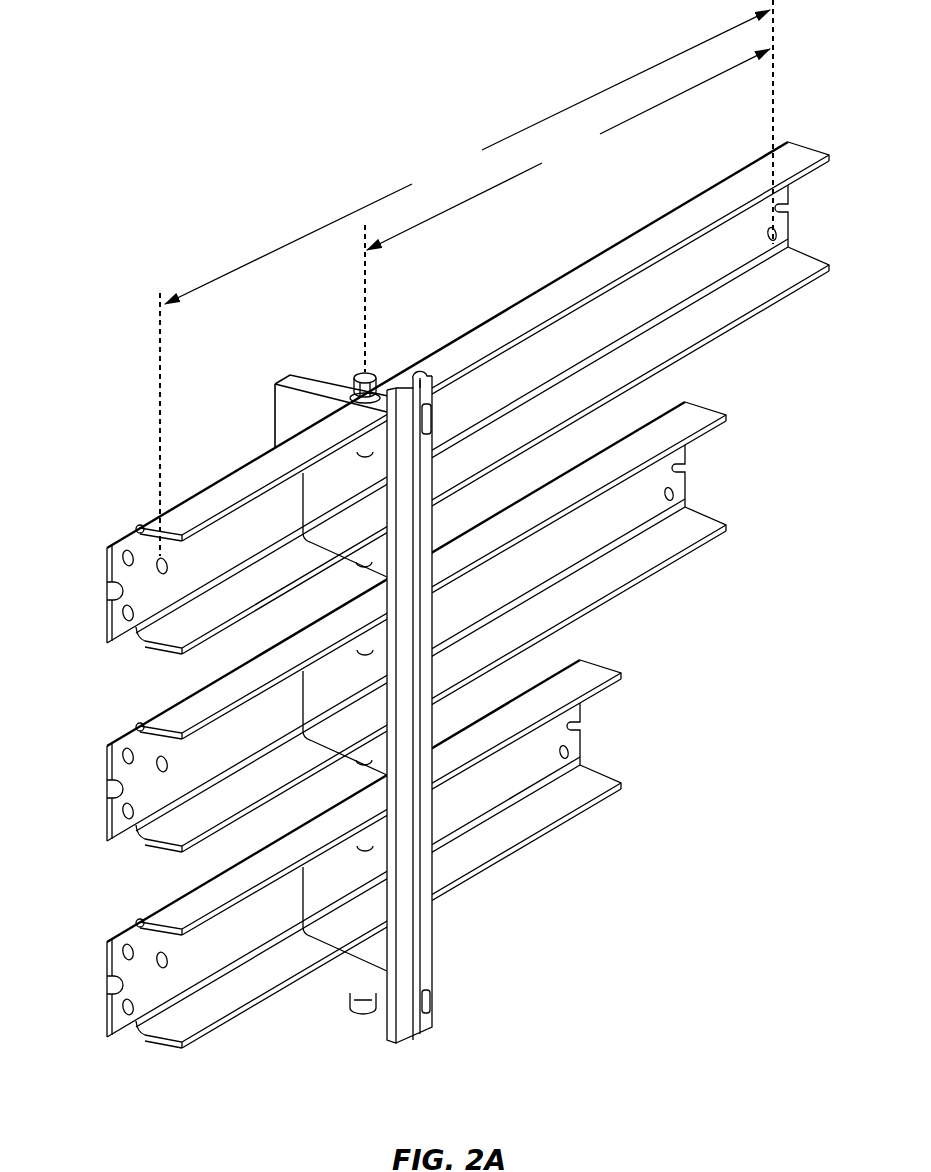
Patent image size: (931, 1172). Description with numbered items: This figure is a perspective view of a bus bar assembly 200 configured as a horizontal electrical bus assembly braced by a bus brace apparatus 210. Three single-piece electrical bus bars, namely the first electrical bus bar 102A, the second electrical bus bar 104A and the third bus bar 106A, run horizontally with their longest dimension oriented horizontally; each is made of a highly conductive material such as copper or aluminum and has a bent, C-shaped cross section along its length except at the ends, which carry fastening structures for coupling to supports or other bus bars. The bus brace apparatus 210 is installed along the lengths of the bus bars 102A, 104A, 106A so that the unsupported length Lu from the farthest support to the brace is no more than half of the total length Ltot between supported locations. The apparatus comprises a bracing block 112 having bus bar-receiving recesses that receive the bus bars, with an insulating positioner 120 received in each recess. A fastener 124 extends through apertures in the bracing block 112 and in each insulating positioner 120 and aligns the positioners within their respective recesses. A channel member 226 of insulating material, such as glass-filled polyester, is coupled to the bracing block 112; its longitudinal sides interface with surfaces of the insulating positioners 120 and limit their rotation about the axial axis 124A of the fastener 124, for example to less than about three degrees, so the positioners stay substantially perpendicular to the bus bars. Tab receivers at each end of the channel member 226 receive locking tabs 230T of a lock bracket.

The bus bar assembly 200 is at (180, 238).
The bus brace apparatus 210 is at (293, 367).
The bracing block 112 is at (270, 385).
The first electrical bus bar 102A is at (253, 456).
The second electrical bus bar 104A is at (145, 712).
The third bus bar 106A is at (145, 906).
The insulating positioner 120 is at (345, 722).
The channel member 226 is at (440, 940).
The fastener 124 is at (355, 368).
The axial axis of the fastener 124A is at (368, 292).
The locking tab 230T is at (440, 404).